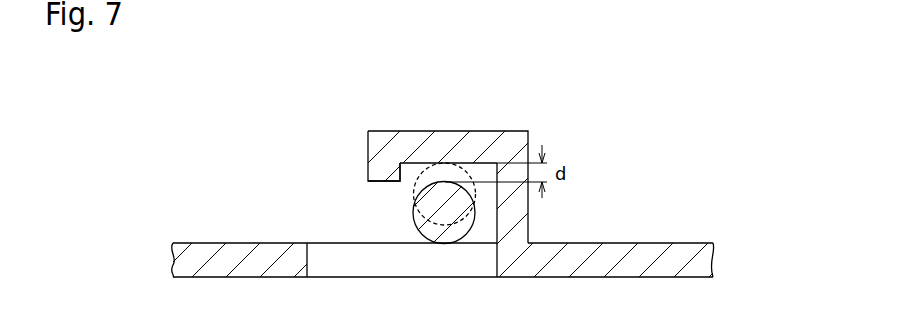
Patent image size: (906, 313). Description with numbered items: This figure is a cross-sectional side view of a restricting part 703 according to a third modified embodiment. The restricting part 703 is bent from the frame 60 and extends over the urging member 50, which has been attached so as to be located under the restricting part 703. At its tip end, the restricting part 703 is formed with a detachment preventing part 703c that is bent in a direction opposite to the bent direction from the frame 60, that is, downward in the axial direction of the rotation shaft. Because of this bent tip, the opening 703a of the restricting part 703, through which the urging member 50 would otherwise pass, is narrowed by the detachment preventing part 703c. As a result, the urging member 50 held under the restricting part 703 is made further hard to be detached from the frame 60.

The restricting part 703 is at (490, 130).
The opening 703a is at (395, 202).
The detachment preventing part 703c is at (377, 177).
The urging member 50 is at (419, 233).
The frame 60 is at (648, 243).